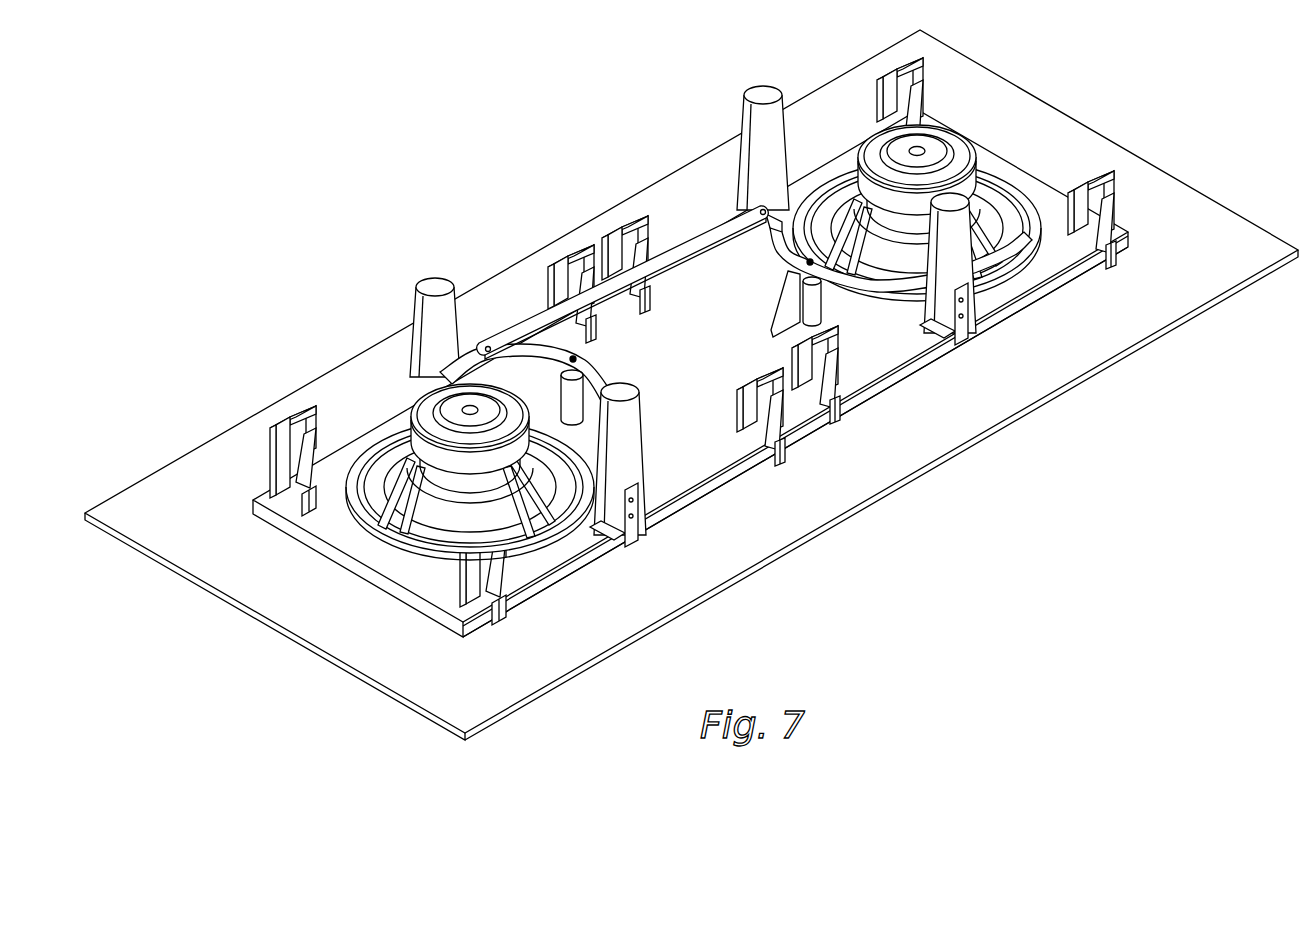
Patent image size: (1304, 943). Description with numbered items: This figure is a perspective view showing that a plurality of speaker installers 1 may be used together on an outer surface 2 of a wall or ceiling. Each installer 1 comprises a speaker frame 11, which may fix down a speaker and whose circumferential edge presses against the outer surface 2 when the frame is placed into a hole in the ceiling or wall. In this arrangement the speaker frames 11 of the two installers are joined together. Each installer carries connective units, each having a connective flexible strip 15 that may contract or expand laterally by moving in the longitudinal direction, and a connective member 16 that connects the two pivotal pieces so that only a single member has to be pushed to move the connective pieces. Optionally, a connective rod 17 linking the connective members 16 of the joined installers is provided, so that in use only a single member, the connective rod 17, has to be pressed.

The speaker installer 1 is at (691, 384).
The outer surface 2 is at (1018, 388).
The speaker frame 11 is at (631, 390).
The connective flexible strip 15 is at (907, 375).
The connective member 16 is at (831, 262).
The connective rod 17 is at (683, 250).